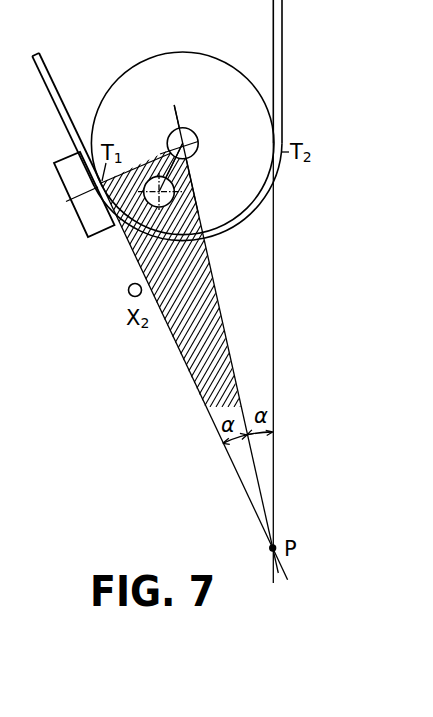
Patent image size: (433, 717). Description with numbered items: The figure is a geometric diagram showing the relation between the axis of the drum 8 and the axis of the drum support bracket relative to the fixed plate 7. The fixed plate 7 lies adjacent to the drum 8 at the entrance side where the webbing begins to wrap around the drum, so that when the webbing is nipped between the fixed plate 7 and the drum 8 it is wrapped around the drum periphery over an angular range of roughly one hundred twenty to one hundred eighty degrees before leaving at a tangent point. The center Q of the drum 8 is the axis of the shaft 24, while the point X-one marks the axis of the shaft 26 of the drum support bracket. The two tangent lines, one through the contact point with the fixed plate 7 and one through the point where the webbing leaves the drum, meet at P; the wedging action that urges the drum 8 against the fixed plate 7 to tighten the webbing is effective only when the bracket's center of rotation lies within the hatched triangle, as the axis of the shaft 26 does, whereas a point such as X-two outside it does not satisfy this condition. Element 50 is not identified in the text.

The fixed plate 7 is at (78, 213).
The drum 8 is at (178, 55).
The shaft 24 is at (197, 138).
The shaft 26 is at (175, 183).
The strip 50 is at (282, 13).